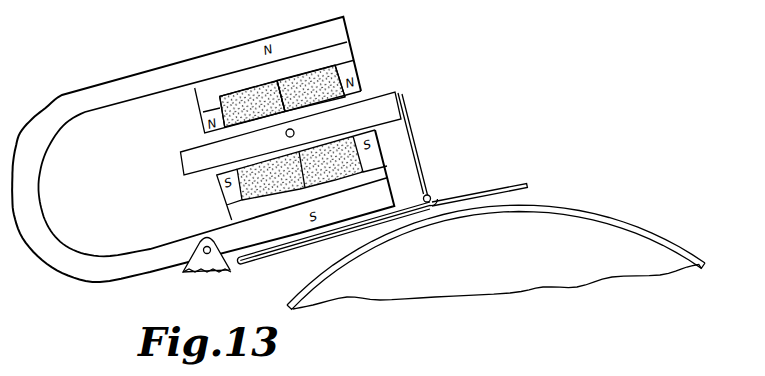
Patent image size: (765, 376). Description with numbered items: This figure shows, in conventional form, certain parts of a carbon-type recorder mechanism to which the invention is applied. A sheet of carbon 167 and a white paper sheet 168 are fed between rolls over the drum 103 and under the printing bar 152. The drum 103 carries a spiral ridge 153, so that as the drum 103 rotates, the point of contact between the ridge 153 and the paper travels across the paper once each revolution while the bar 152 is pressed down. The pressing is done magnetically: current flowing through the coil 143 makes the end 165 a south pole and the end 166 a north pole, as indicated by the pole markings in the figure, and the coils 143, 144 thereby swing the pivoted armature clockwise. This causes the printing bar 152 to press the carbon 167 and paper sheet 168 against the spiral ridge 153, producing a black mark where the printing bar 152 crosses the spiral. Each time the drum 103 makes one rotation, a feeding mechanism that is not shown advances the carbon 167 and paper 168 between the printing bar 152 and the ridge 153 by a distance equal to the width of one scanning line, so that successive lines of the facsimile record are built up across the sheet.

The drum 103 is at (595, 230).
The coil 143 is at (203, 112).
The coil 144 is at (330, 78).
The printing bar 152 is at (430, 194).
The spiral ridge 153 is at (538, 207).
The end 165 is at (181, 160).
The end 166 is at (393, 92).
The carbon 167 is at (443, 200).
The paper sheet 168 is at (508, 187).